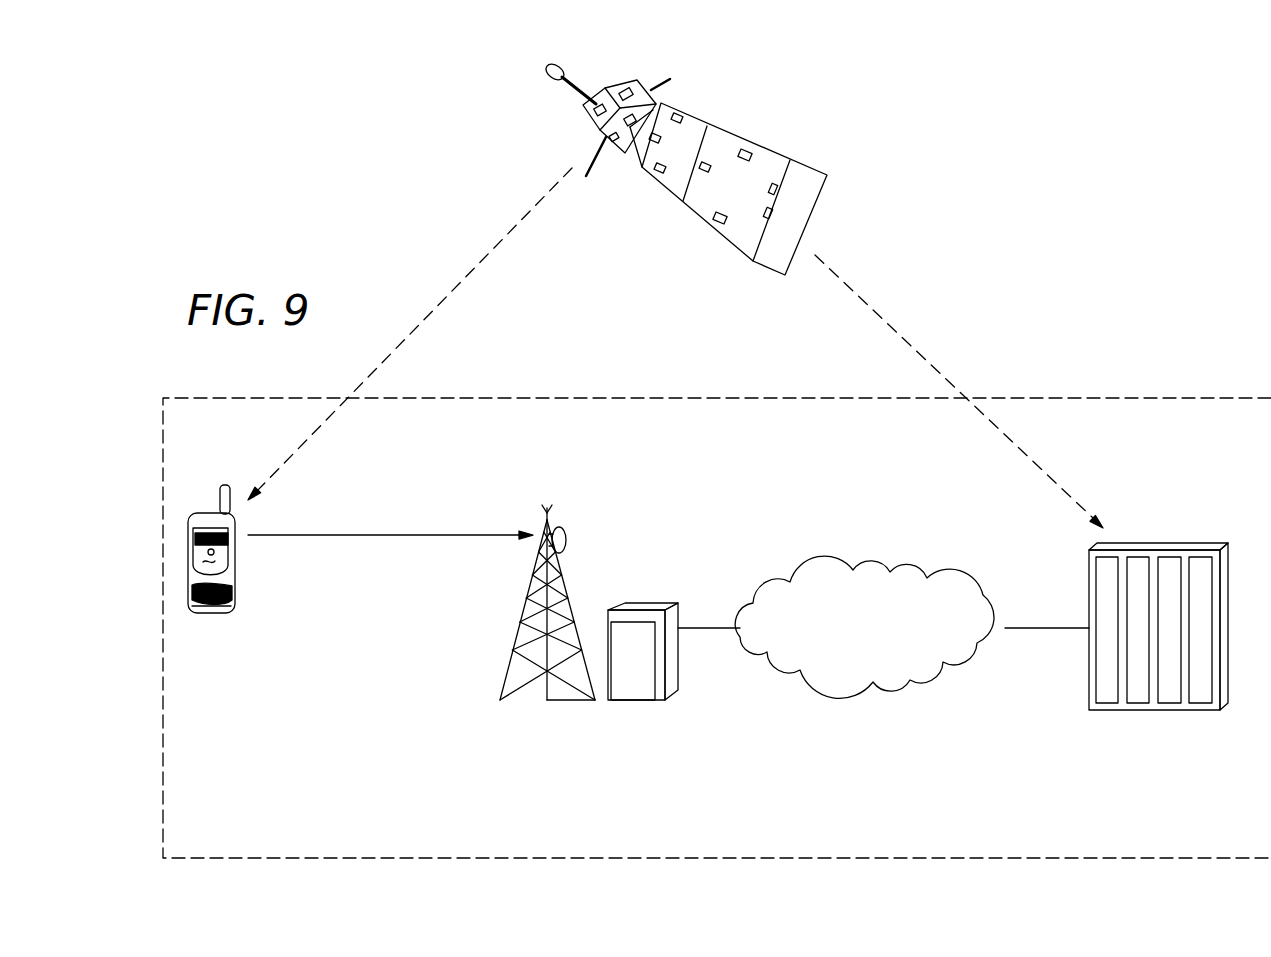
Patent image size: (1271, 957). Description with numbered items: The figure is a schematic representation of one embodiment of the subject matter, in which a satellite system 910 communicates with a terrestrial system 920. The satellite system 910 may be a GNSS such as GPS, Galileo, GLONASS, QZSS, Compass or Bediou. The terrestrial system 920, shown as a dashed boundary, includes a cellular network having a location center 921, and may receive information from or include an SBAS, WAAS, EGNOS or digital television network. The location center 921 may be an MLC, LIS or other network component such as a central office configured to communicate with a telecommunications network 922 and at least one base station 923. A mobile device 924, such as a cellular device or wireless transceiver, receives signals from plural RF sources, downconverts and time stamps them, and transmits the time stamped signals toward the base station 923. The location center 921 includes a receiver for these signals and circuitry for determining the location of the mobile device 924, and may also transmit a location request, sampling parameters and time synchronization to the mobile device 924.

The satellite system 910 is at (769, 168).
The terrestrial system 920 is at (1113, 397).
The location center 921 is at (1143, 530).
The telecommunications network 922 is at (837, 567).
The base station 923 is at (563, 518).
The mobile device 924 is at (207, 510).